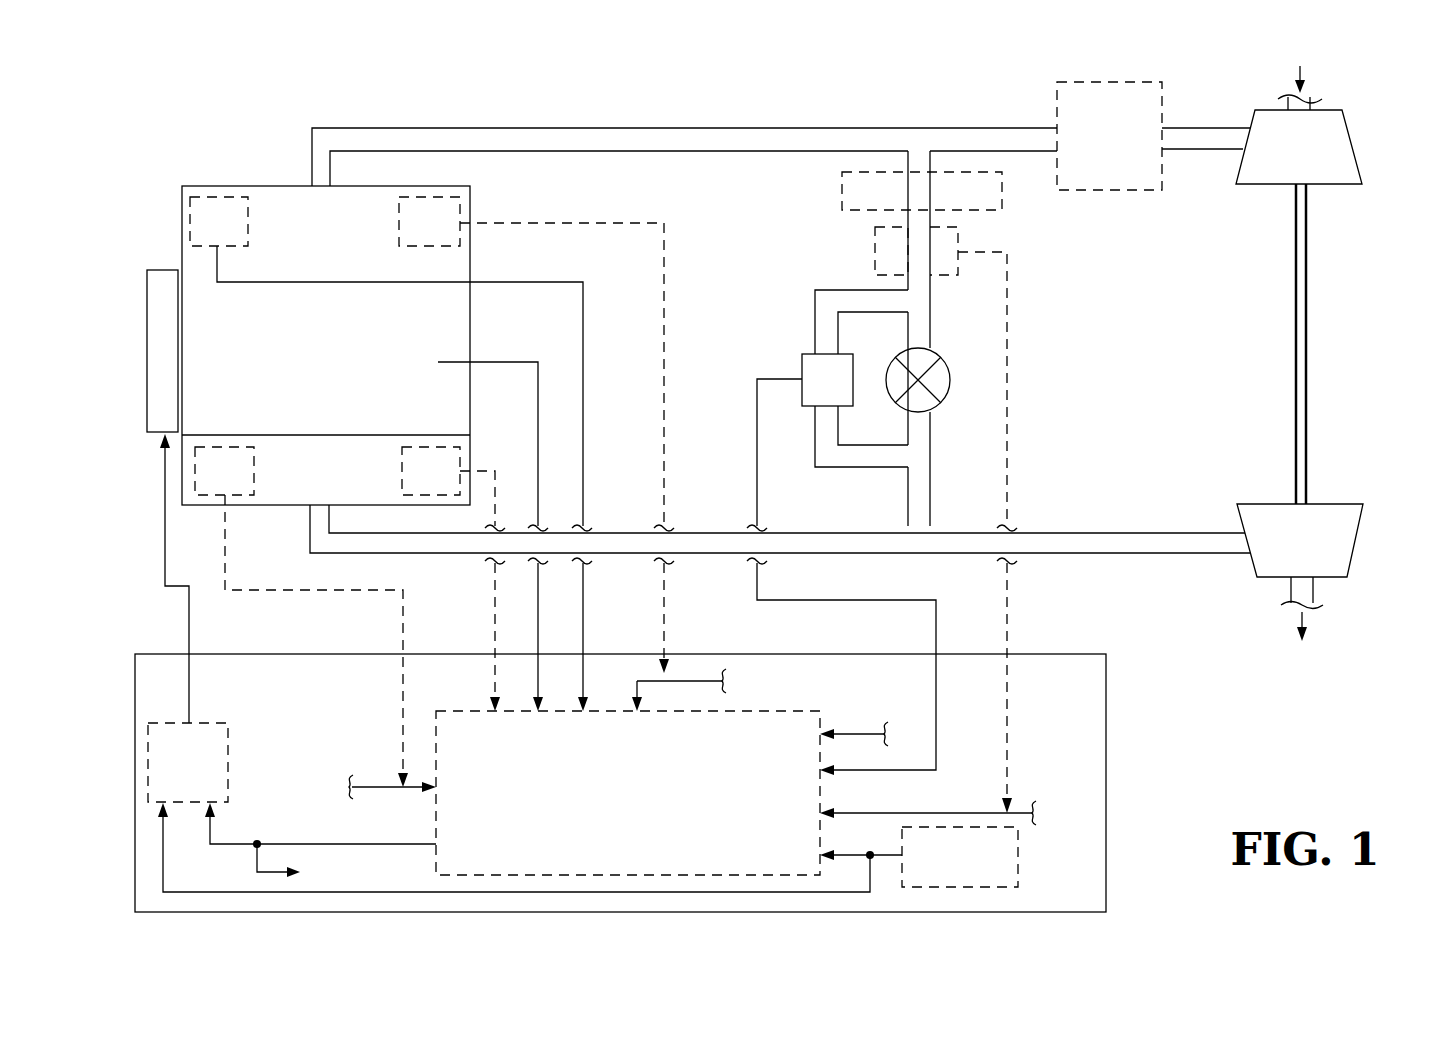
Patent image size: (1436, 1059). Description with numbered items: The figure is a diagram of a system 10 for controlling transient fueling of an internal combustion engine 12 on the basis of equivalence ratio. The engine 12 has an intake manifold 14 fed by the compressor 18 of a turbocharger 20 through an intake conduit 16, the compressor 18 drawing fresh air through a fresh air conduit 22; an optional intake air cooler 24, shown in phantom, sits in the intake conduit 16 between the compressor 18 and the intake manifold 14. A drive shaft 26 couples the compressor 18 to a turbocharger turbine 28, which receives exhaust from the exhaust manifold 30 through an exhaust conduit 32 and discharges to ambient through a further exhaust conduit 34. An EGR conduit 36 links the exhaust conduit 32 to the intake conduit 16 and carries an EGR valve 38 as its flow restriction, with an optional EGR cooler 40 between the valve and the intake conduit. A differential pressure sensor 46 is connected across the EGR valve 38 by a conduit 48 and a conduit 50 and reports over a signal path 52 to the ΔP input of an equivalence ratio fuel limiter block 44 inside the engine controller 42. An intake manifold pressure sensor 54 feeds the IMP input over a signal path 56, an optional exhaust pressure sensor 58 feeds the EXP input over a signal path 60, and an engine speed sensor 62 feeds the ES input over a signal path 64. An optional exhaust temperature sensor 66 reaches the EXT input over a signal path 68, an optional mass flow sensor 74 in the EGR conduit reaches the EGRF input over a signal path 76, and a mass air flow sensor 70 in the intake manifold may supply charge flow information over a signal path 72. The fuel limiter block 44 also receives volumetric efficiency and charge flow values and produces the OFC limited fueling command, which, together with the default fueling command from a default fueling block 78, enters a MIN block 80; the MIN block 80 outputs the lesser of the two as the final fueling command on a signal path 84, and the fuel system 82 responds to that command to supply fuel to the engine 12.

The system 10 is at (239, 132).
The internal combustion engine 12 is at (470, 412).
The intake manifold 14 is at (246, 186).
The intake conduit 16 is at (718, 128).
The compressor 18 is at (1355, 150).
The turbocharger 20 is at (1368, 323).
The fresh air conduit 22 is at (1312, 103).
The intake air cooler 24 is at (1140, 190).
The drive shaft 26 is at (1308, 397).
The turbocharger turbine 28 is at (1358, 540).
The exhaust manifold 30 is at (210, 507).
The exhaust conduit 32 is at (1107, 530).
The exhaust conduit 34 is at (1313, 588).
The EGR conduit 36 is at (932, 460).
The EGR valve 38 is at (935, 352).
The EGR cooler 40 is at (842, 195).
The engine controller 42 is at (1106, 823).
The equivalence ratio fuel limiter block 44 is at (455, 708).
The differential pressure sensor 46 is at (808, 408).
The conduit 48 is at (815, 315).
The conduit 50 is at (852, 470).
The signal path 52 is at (757, 492).
The intake manifold pressure sensor 54 is at (218, 197).
The signal path 56 is at (570, 285).
The exhaust pressure sensor 58 is at (410, 447).
The signal path 60 is at (492, 470).
The engine speed sensor 62 is at (407, 340).
The signal path 64 is at (483, 362).
The exhaust temperature sensor 66 is at (235, 447).
The signal path 68 is at (225, 555).
The mass air flow sensor 70 is at (460, 212).
The signal path 72 is at (667, 340).
The mass flow sensor 74 is at (960, 243).
The signal path 76 is at (1010, 362).
The default fueling block 78 is at (1018, 857).
The MIN block 80 is at (228, 795).
The fuel system 82 is at (165, 270).
The signal path 84 is at (189, 640).